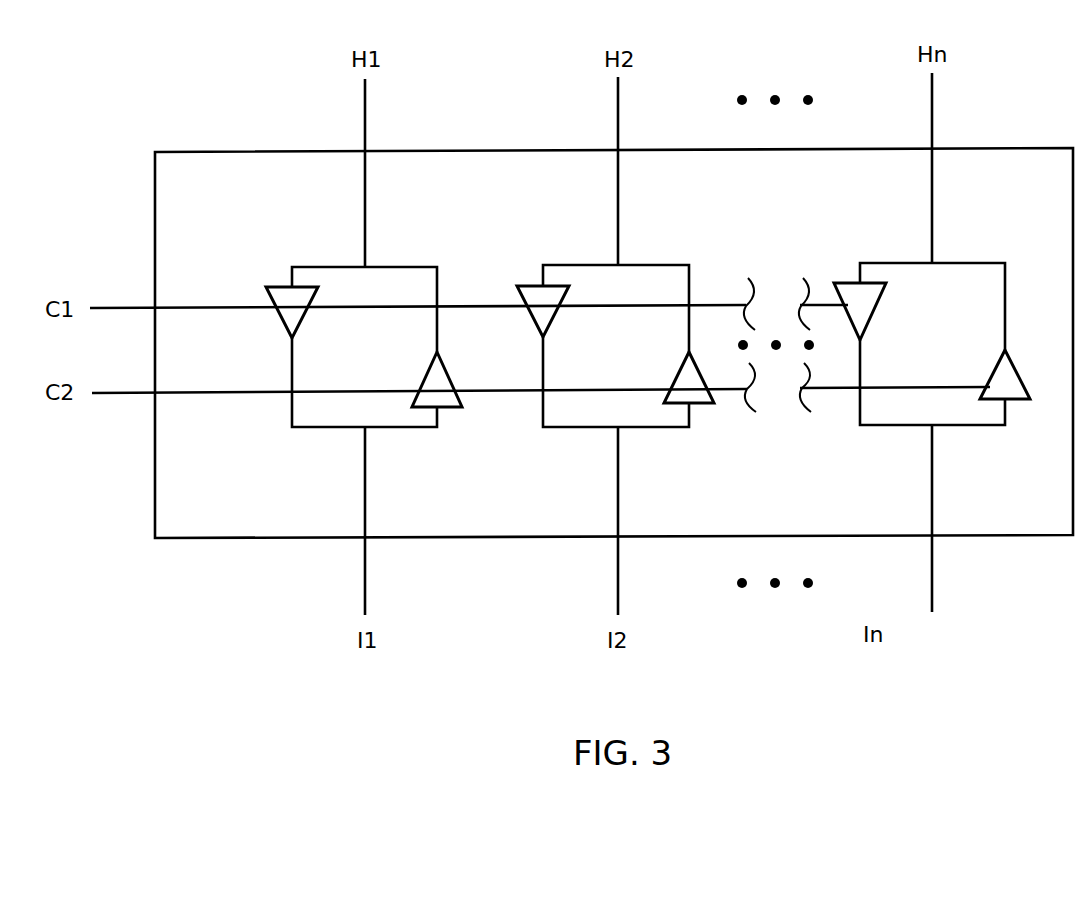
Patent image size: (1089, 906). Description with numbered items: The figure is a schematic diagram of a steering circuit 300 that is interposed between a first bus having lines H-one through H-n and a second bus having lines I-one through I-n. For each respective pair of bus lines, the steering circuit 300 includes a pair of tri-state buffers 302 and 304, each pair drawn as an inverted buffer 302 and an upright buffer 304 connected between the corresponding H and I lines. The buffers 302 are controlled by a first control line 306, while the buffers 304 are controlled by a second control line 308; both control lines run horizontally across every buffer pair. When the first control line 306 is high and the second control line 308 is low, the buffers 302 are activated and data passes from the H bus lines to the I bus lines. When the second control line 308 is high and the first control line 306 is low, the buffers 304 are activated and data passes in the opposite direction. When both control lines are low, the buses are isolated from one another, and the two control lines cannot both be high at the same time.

The steering circuit 300 is at (1000, 148).
The tri-state buffer 302 is at (270, 285).
The tri-state buffer 304 is at (450, 409).
The control line C1 306 is at (117, 305).
The control line C2 308 is at (125, 391).